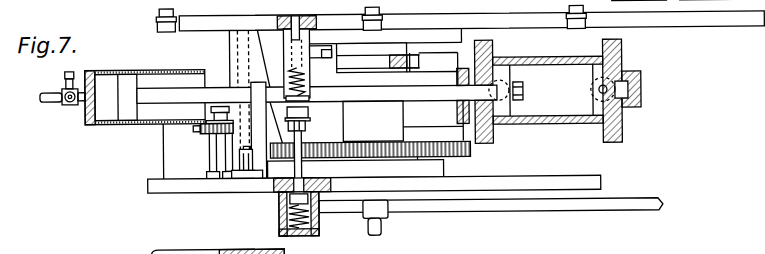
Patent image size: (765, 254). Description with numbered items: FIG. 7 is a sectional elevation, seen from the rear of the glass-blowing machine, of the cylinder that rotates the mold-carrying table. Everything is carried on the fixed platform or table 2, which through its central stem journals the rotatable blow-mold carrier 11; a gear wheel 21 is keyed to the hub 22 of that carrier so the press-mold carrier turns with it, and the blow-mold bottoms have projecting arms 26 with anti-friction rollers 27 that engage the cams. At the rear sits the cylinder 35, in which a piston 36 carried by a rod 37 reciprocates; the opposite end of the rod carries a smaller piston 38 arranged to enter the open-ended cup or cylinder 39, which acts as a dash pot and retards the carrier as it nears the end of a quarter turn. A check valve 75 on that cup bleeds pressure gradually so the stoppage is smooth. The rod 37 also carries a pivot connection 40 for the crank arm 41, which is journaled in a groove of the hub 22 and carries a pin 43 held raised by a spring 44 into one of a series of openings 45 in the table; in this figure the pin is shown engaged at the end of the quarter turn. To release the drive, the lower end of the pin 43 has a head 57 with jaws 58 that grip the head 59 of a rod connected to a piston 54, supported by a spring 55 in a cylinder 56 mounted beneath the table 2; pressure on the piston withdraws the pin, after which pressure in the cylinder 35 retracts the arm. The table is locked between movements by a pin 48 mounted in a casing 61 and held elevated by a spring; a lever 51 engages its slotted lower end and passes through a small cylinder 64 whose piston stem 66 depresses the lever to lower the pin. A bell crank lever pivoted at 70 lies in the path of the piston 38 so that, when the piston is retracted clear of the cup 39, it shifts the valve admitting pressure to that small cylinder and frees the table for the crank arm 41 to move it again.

The fixed platform or table 2 is at (190, 182).
The rotatable blow-mold carrier 11 is at (488, 14).
The gear wheel 21 is at (472, 150).
The hub 22 is at (403, 120).
The projecting arm 26 is at (157, 20).
The anti-friction roller 27 is at (166, 30).
The cylinder 35 is at (557, 91).
The piston 36 is at (517, 101).
The rod 37 is at (215, 88).
The smaller piston 38 is at (137, 79).
The open ended cup or cylinder 39 is at (108, 122).
The pivot connection 40 is at (315, 50).
The crank arm 41 is at (397, 64).
The pin 43 is at (293, 16).
The spring 44 is at (295, 80).
The openings 45 is at (299, 16).
The pin 48 is at (230, 31).
The lever 51 is at (250, 160).
The piston 54 is at (288, 201).
The spring 55 is at (299, 229).
The cylinder 56 is at (317, 219).
The head 57 is at (297, 112).
The jaws 58 is at (306, 127).
The head 59 is at (303, 128).
The casing 61 is at (240, 89).
The small cylinder 64 is at (233, 127).
The stem 66 is at (246, 148).
The pivot 70 is at (217, 114).
The check valve 75 is at (65, 76).